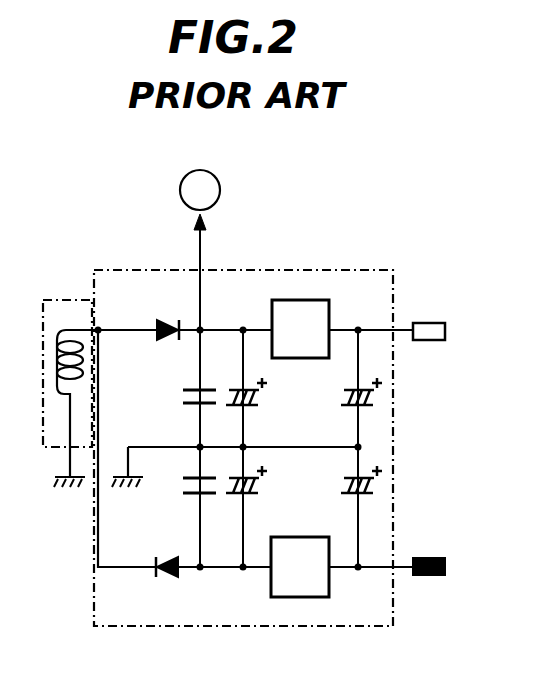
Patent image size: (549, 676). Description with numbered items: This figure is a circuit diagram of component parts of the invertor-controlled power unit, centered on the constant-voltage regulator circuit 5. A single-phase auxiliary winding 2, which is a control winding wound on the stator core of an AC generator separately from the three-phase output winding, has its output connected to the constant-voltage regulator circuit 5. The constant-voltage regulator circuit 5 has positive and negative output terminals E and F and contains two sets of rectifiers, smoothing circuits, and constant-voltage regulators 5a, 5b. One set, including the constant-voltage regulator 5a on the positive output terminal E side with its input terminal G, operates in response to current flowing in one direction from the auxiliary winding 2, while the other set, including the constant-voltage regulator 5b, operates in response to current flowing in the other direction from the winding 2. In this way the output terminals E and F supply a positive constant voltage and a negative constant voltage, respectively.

The single-phase auxiliary winding 2 is at (80, 298).
The constant-voltage regulator circuit 5 is at (334, 270).
The constant-voltage regulator 5a is at (286, 300).
The constant-voltage regulator 5b is at (292, 598).